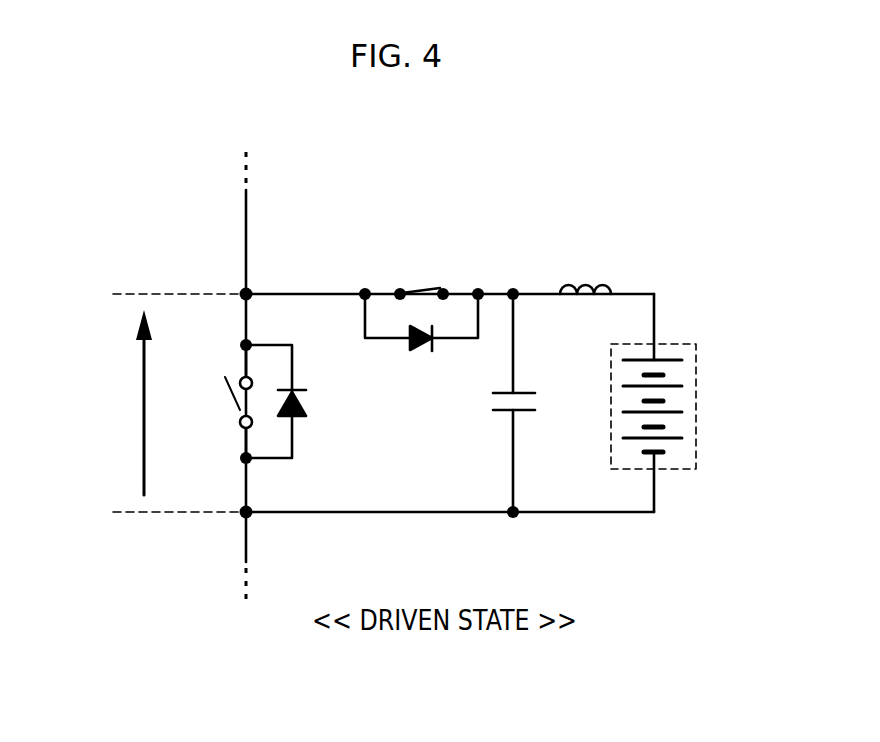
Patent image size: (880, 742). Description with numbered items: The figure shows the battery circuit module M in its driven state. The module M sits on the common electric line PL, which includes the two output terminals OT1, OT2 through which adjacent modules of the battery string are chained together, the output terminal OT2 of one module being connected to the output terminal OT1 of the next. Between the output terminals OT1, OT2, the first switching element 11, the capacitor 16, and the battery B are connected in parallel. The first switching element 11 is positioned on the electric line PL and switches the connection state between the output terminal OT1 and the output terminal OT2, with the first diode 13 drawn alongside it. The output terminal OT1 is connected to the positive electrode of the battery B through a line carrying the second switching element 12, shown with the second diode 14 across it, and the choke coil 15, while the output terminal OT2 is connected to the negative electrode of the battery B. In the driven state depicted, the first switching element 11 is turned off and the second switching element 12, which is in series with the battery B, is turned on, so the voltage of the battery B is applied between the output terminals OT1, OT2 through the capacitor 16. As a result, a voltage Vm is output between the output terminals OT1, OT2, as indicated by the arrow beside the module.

The first switching element 11 is at (230, 408).
The second switching element 12 is at (420, 287).
The first diode 13 is at (297, 414).
The second diode 14 is at (435, 345).
The choke coil 15 is at (602, 282).
The capacitor 16 is at (508, 410).
The electric line PL is at (247, 211).
The output terminal OT1 is at (240, 294).
The output terminal OT2 is at (243, 515).
The voltage Vm is at (169, 403).
The battery B is at (672, 343).
The battery circuit module M is at (692, 193).